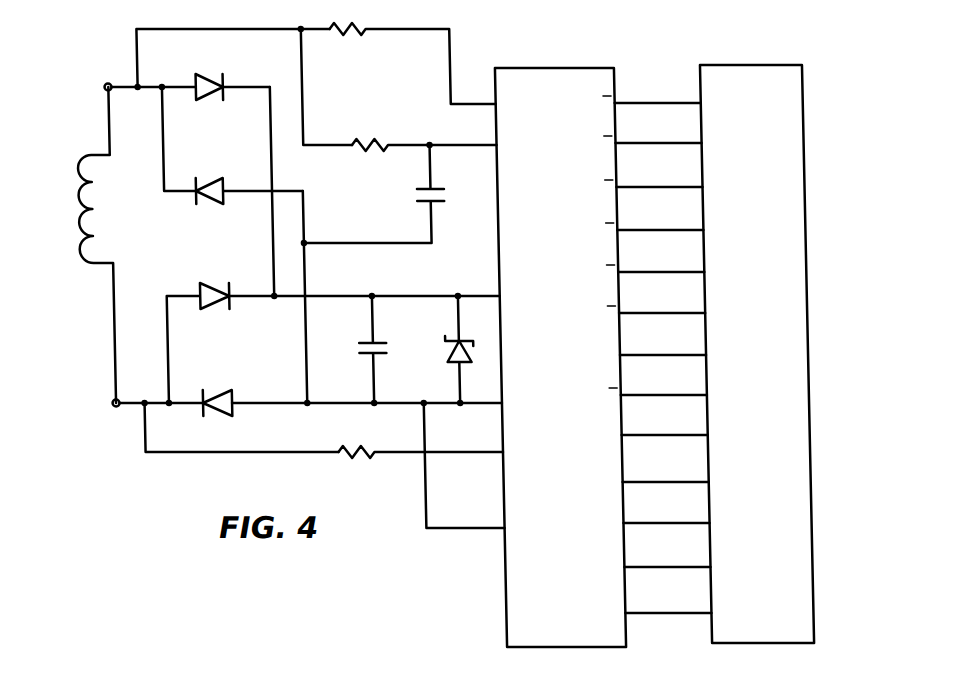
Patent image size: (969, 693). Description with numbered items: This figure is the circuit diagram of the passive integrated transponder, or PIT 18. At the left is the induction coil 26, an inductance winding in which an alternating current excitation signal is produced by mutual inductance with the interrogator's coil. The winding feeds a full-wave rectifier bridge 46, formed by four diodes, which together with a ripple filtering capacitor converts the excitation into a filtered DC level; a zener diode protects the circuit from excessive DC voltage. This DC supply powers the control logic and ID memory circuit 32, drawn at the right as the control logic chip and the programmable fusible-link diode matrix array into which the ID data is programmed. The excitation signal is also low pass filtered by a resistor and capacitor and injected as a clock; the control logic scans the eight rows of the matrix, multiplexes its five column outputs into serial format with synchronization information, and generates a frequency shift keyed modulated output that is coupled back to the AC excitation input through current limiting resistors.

The passive integrated transponder (PIT) 18 is at (372, 488).
The induction coil 26 is at (72, 166).
The control logic and ID memory circuit 32 is at (728, 55).
The full-wave rectifier bridge 46 is at (172, 262).